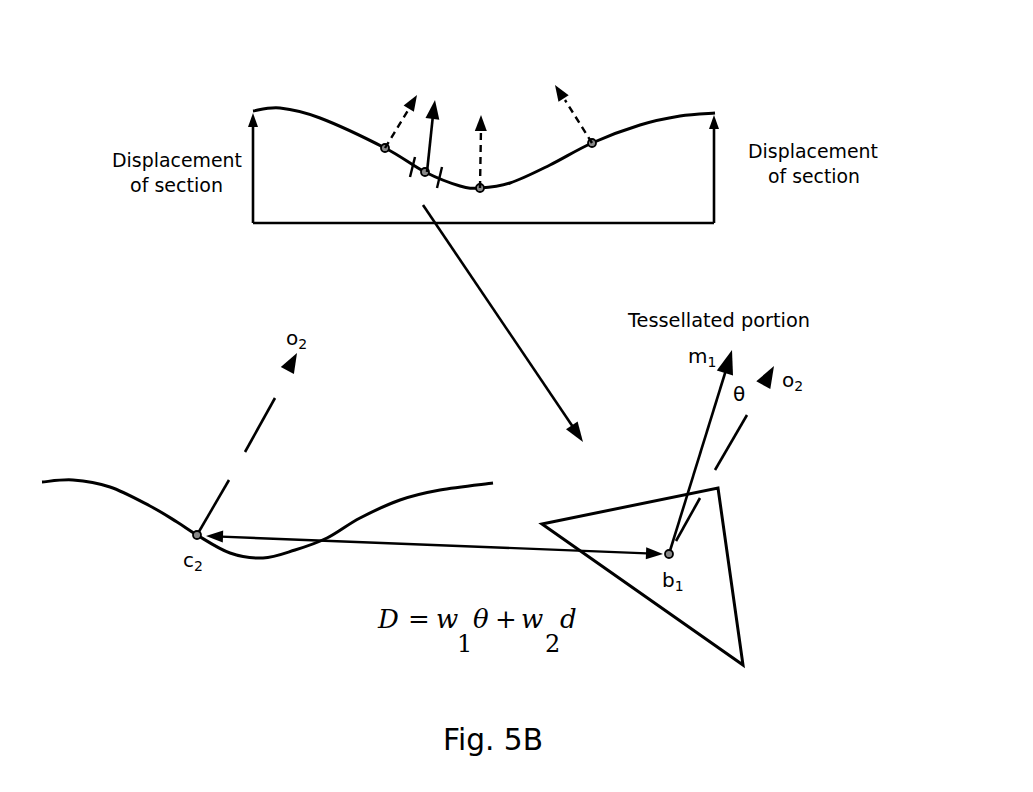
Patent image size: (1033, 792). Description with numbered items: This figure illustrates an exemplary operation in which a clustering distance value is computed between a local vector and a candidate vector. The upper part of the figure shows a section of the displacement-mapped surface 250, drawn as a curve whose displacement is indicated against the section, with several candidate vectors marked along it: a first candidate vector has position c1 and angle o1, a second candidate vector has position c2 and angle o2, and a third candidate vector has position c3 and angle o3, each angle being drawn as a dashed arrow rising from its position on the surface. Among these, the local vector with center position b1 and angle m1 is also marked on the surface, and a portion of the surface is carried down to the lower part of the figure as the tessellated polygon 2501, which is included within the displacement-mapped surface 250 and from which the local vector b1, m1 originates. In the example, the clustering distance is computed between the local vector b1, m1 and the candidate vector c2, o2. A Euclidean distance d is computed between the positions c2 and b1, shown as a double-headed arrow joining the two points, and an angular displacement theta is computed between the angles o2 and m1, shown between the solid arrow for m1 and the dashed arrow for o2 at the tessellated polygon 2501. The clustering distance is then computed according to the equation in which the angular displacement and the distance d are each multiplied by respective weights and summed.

The displacement-mapped surface 250 is at (702, 107).
The tessellated polygon 2501 is at (682, 576).
The candidate vector position c1 is at (482, 203).
The candidate vector position c2 is at (384, 164).
The candidate vector position c3 is at (602, 155).
The local vector center position b1 is at (423, 186).
The local vector angle m1 is at (449, 130).
The candidate vector angle o1 is at (491, 143).
The candidate vector angle o2 is at (401, 108).
The candidate vector angle o3 is at (573, 104).
The Euclidean distance d is at (434, 538).